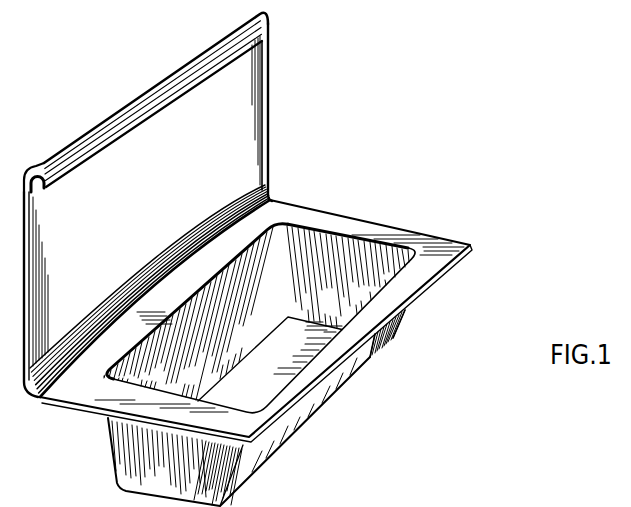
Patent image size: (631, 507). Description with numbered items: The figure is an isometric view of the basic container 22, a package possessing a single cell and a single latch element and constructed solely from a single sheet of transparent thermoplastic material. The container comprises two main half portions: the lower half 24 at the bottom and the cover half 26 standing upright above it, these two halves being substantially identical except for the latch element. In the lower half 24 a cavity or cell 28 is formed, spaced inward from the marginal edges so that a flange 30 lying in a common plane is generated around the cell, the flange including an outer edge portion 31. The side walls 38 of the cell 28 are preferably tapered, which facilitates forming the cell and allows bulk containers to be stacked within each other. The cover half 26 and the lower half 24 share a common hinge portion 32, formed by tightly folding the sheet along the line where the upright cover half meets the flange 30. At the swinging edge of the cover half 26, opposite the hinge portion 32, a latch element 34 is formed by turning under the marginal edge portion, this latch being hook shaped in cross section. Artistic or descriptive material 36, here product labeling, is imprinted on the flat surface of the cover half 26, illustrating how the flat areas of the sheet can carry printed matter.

The container 22 is at (342, 303).
The lower half 24 is at (452, 239).
The cover half 26 is at (255, 80).
The cavity or cell 28 is at (350, 243).
The flange 30 is at (423, 287).
The outer edge portion 31 is at (396, 336).
The hinge portion 32 is at (42, 400).
The latch element 34 is at (72, 157).
The artistic or descriptive material 36 is at (197, 152).
The side walls 38 is at (320, 398).